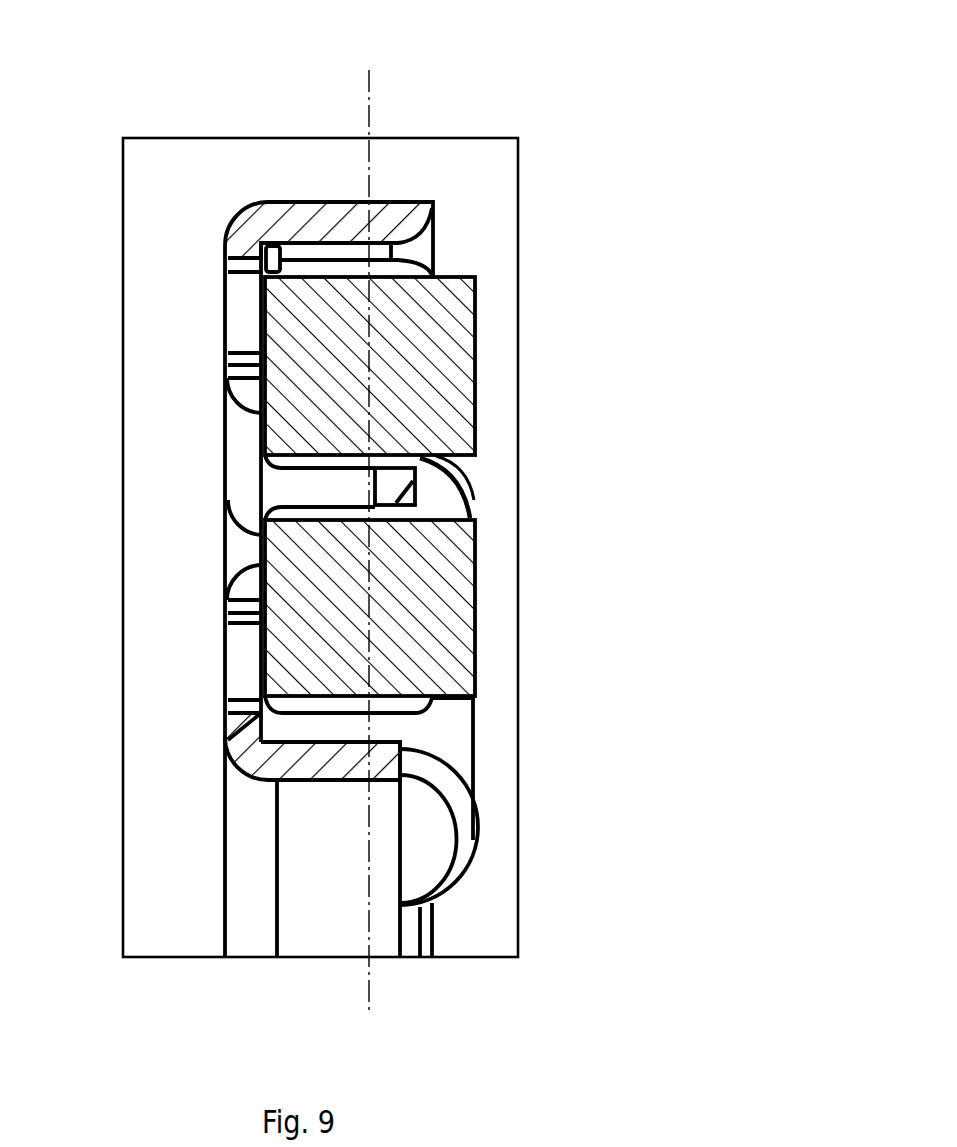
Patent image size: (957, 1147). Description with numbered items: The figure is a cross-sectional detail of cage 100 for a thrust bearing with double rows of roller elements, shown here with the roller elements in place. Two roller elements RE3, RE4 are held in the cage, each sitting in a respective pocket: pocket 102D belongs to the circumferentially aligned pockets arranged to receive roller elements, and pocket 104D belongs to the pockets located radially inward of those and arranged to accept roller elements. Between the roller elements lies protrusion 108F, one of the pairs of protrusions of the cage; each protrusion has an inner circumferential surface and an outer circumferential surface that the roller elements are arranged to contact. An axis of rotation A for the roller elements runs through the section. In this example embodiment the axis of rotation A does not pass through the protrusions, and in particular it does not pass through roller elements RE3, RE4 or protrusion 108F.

The cage 100 is at (558, 68).
The axis of rotation A is at (368, 93).
The pocket 104D is at (381, 257).
The roller element RE4 is at (283, 327).
The protrusion 108F is at (389, 476).
The roller element RE3 is at (283, 556).
The pocket 102D is at (398, 721).